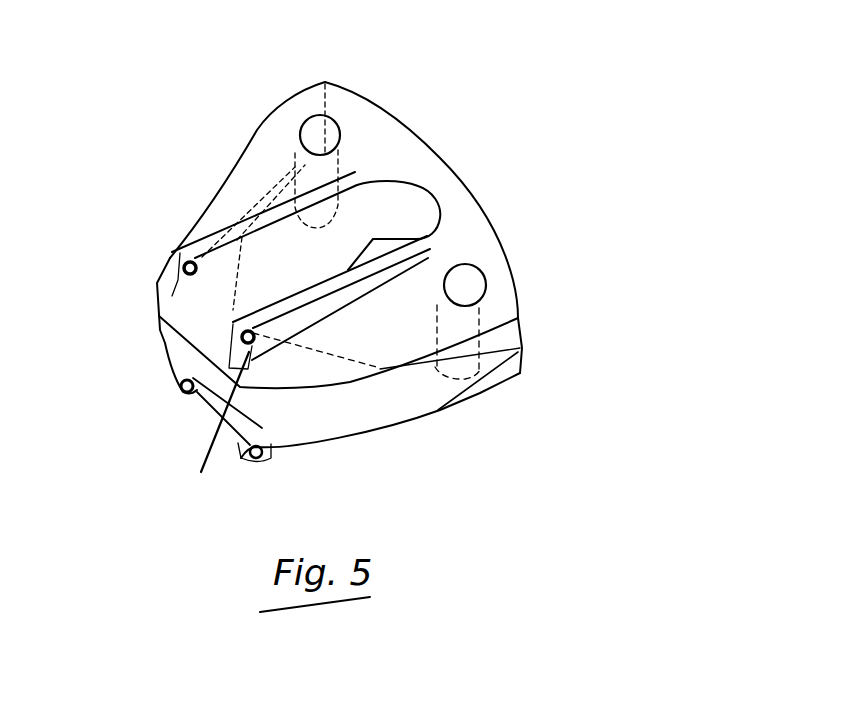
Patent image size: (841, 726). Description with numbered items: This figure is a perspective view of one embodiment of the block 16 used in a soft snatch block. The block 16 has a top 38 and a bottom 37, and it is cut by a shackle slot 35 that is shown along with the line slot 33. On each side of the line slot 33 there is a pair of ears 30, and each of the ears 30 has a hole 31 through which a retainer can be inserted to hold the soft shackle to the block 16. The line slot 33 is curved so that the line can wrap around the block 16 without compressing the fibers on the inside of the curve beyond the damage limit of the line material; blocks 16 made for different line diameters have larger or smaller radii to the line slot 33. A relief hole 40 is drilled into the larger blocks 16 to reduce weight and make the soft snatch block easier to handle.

The block 16 is at (318, 271).
The ears 30 is at (177, 257).
The hole 31 is at (265, 461).
The line slot 33 is at (394, 418).
The shackle slot 35 is at (206, 303).
The bottom 37 is at (183, 455).
The top 38 is at (495, 176).
The relief hole 40 is at (340, 122).